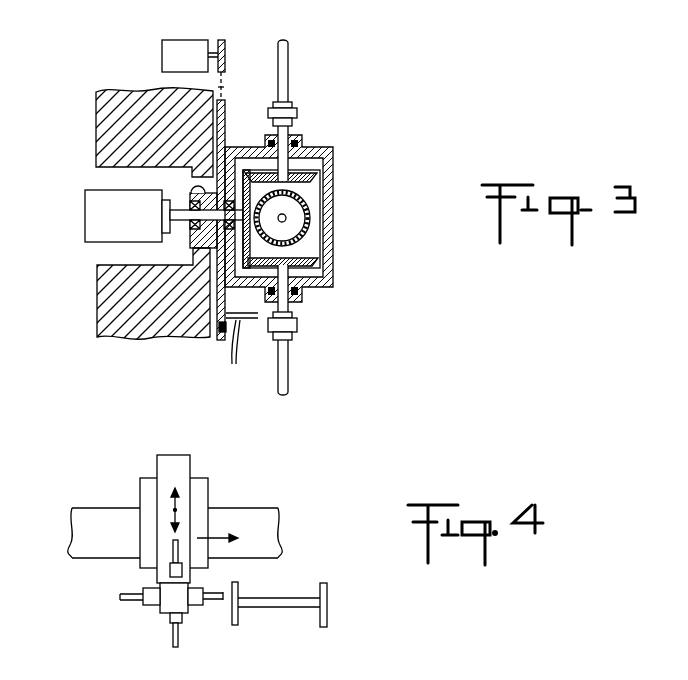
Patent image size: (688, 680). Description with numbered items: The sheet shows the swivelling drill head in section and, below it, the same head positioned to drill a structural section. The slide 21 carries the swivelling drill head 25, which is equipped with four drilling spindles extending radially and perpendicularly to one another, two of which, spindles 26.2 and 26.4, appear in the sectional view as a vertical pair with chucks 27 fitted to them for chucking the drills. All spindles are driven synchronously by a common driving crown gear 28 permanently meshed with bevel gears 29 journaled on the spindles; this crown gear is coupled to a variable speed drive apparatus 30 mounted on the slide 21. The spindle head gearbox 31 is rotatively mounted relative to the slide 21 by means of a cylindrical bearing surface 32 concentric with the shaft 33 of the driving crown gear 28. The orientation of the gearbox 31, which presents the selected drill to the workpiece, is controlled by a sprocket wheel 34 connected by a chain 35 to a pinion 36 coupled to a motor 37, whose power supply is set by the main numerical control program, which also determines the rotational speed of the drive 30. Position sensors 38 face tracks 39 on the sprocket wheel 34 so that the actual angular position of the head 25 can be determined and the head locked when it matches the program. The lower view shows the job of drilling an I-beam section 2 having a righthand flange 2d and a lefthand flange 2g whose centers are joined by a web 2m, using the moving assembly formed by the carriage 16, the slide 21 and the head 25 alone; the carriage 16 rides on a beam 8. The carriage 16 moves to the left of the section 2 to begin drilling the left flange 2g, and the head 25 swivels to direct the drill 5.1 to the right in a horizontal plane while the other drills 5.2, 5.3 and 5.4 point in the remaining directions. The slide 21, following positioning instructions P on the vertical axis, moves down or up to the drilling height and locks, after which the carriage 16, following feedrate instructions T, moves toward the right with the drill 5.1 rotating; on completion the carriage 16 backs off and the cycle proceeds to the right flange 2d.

In FIG. 3, the slide 21 is at (100, 312).
In FIG. 4, the slide 21 is at (162, 537).
In FIG. 3, the swivelling drill head 25 is at (346, 247).
In FIG. 4, the swivelling drill head 25 is at (172, 597).
In FIG. 3, the drilling spindle 26.2 is at (290, 382).
In FIG. 3, the drilling spindle 26.4 is at (284, 66).
In FIG. 3, the chuck 27 is at (297, 110).
In FIG. 3, the driving crown gear 28 is at (242, 160).
In FIG. 3, the bevel gear 29 is at (312, 203).
In FIG. 3, the variable speed drive apparatus 30 is at (86, 224).
In FIG. 3, the spindle head gearbox 31 is at (332, 233).
In FIG. 3, the cylindrical bearing surface 32 is at (191, 184).
In FIG. 3, the shaft 33 is at (186, 222).
In FIG. 3, the sprocket wheel 34 is at (215, 341).
In FIG. 3, the chain 35 is at (225, 88).
In FIG. 3, the pinion 36 is at (225, 50).
In FIG. 3, the motor 37 is at (176, 48).
In FIG. 3, the position sensor 38 is at (246, 321).
In FIG. 3, the track 39 is at (228, 357).
In FIG. 4, the carriage 16 is at (203, 490).
In FIG. 4, the beam 8 is at (259, 517).
In FIG. 4, the drill 5.1 is at (217, 603).
In FIG. 4, the drill 5.2 is at (173, 640).
In FIG. 4, the drill 5.3 is at (128, 601).
In FIG. 4, the drill 5.4 is at (173, 553).
In FIG. 4, the I-beam section 2 is at (295, 623).
In FIG. 4, the web 2m is at (283, 594).
In FIG. 4, the righthand flange 2d is at (328, 618).
In FIG. 4, the lefthand flange 2g is at (242, 626).